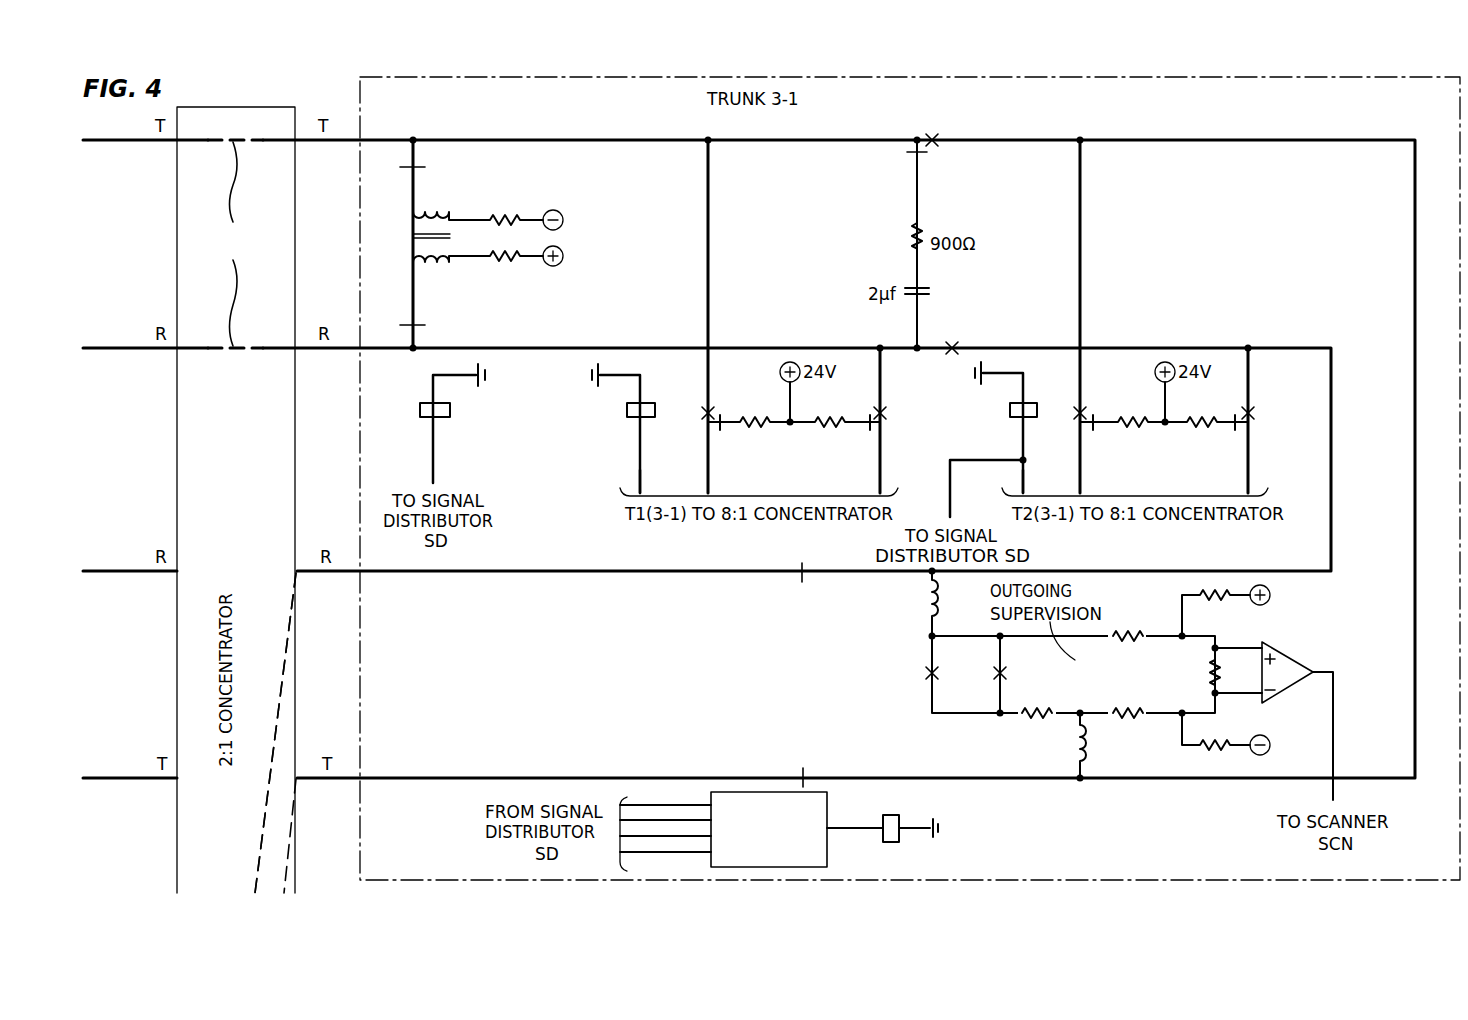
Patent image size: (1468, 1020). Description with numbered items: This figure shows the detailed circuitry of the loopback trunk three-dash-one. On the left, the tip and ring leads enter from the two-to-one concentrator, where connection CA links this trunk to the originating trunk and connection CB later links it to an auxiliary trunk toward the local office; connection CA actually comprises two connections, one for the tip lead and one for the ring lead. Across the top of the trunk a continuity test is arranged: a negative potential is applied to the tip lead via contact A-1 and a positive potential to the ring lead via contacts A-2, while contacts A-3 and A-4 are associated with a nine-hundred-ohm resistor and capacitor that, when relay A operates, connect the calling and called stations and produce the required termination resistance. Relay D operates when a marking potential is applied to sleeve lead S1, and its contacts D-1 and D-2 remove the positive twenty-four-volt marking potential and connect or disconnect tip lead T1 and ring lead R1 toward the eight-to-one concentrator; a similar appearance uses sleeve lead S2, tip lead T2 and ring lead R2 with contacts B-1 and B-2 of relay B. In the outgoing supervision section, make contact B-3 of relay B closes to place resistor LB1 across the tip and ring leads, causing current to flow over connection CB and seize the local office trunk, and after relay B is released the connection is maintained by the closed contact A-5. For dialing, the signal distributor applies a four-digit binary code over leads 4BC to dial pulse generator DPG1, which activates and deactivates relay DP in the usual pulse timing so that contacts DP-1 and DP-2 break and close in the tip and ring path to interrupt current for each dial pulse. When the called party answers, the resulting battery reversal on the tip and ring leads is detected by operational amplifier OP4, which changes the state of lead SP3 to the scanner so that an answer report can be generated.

The contact A-1 is at (428, 167).
The contact A-2 is at (429, 325).
The contact A-3 is at (932, 154).
The contact A-4 is at (949, 337).
The contact A-5 is at (912, 676).
The contact B-1 is at (1096, 405).
The contact B-2 is at (1232, 405).
The make contact B-3 is at (1016, 676).
The contact D-1 is at (724, 405).
The contact D-2 is at (863, 405).
The relay A is at (452, 423).
The relay B is at (1006, 427).
The relay D is at (623, 428).
The sleeve lead S1 is at (653, 482).
The tip lead T1 is at (720, 316).
The ring lead R1 is at (871, 420).
The sleeve lead S2 is at (1036, 482).
The tip lead T2 is at (1092, 316).
The ring lead R2 is at (1237, 420).
The connection CA is at (233, 244).
The connection CB is at (285, 866).
The contact DP-1 is at (803, 586).
The contact DP-2 is at (800, 766).
The relay DP is at (882, 817).
The dial pulse generator DPG1 is at (822, 850).
The resistor LB1 is at (1037, 725).
The operational amplifier OP4 is at (1288, 668).
The lead SP3 is at (1340, 736).
The leads 4BC is at (676, 860).